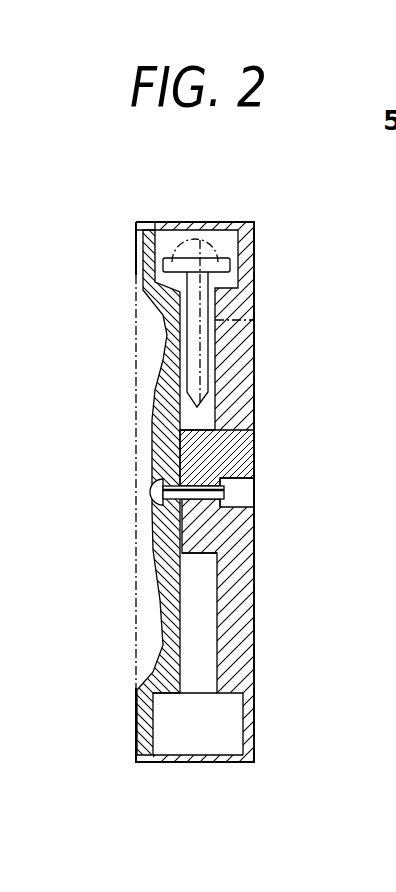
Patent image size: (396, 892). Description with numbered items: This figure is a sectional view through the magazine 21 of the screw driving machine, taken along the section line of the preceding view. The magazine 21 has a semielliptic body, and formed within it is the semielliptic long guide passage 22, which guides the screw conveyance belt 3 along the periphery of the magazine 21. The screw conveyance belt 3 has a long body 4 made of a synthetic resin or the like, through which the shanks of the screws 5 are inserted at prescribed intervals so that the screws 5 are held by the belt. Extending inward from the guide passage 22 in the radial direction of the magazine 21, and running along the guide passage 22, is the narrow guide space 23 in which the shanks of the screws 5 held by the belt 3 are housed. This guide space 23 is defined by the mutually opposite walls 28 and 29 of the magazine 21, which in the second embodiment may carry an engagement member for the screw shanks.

The magazine 21 is at (263, 369).
The guide passage 22 is at (237, 228).
The guide space 23 is at (207, 415).
The wall 28 is at (236, 457).
The wall 29 is at (160, 416).
The screw conveyance belt 3 is at (229, 282).
The body 4 is at (163, 265).
The screw 5 is at (254, 320).